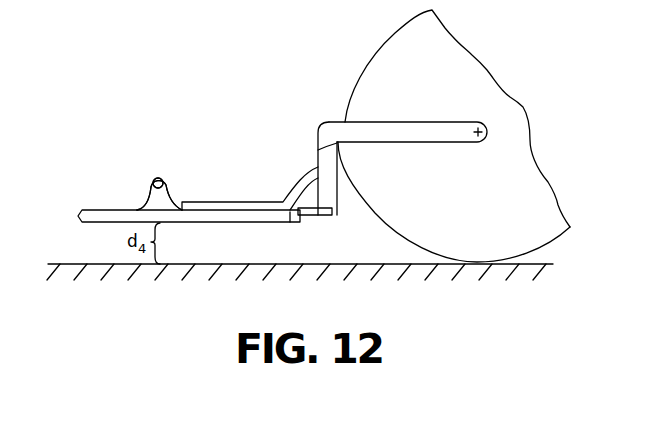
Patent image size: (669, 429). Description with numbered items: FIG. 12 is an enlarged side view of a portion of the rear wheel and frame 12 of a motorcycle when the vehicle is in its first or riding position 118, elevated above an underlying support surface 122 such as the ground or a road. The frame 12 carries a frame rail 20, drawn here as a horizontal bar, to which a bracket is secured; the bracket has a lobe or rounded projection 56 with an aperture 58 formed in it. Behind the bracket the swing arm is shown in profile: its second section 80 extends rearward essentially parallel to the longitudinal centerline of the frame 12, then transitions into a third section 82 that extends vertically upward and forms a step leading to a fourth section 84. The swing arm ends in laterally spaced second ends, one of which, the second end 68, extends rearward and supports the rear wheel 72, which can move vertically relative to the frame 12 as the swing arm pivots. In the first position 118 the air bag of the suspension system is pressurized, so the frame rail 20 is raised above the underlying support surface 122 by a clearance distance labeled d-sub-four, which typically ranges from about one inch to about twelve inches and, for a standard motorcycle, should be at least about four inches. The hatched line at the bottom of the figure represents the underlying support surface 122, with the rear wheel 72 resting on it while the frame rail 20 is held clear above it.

The frame 12 is at (178, 144).
The frame rail 20 is at (238, 223).
The rounded projection 56 is at (152, 183).
The aperture 58 is at (164, 183).
The second end of swing arm 68 is at (490, 137).
The rear wheel 72 is at (420, 42).
The second section 80 is at (258, 202).
The third section 82 is at (318, 163).
The fourth section 84 is at (418, 122).
The first position 118 is at (62, 239).
The underlying support surface 122 is at (347, 263).